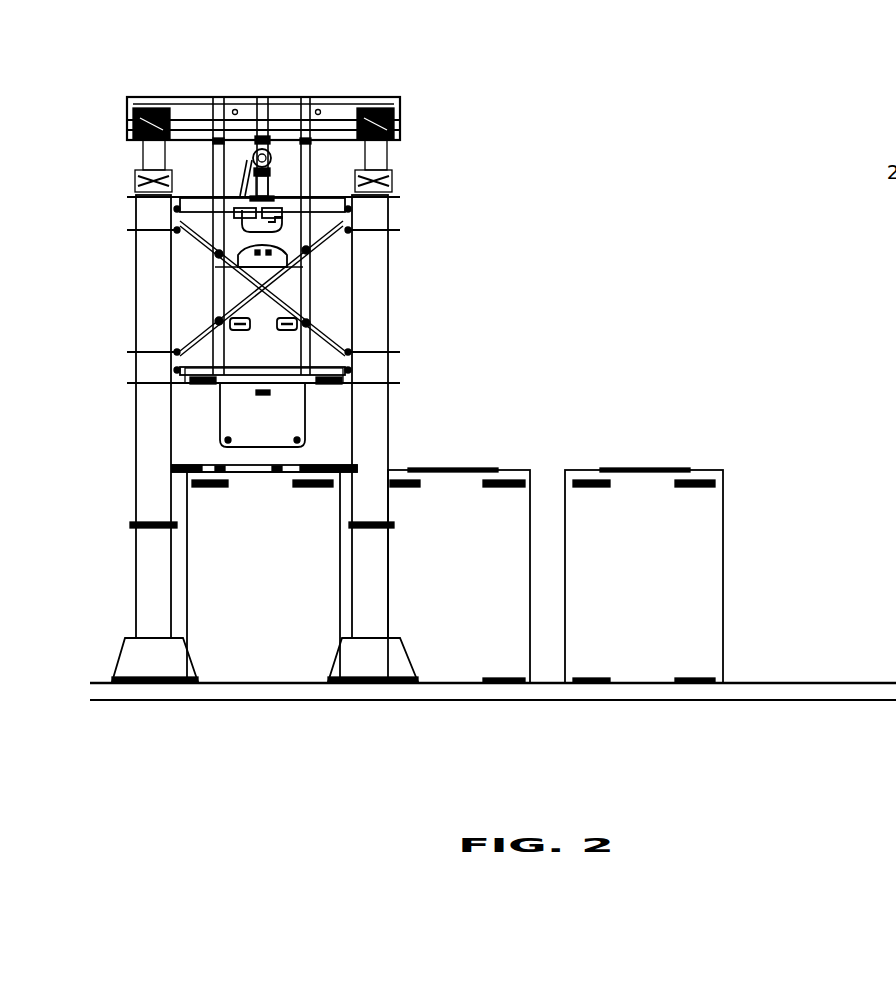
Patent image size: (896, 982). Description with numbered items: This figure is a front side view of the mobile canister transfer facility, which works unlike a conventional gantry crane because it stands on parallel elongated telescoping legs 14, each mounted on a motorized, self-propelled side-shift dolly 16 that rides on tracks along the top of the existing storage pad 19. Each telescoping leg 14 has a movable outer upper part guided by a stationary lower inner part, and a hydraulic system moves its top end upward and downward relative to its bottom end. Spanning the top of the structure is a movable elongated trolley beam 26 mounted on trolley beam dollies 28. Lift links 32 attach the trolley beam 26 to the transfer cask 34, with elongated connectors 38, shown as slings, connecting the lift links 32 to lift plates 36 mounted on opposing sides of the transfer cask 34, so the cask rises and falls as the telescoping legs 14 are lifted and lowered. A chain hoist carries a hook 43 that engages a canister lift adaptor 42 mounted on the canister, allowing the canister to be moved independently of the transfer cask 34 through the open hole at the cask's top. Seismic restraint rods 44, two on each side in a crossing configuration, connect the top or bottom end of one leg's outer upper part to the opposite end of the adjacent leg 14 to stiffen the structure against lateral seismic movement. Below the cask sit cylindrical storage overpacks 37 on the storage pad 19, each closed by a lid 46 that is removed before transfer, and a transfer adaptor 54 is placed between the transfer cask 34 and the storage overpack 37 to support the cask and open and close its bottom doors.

The telescoping leg 14 is at (142, 303).
The movable dolly 16 is at (392, 660).
The storage pad 19 is at (860, 683).
The trolley beam 26 is at (182, 108).
The trolley beam dolly 28 is at (380, 185).
The lift link 32 is at (314, 74).
The transfer cask 34 is at (252, 436).
The lift plate 36 is at (313, 280).
The storage overpack 37 is at (252, 578).
The elongated connector 38 is at (300, 157).
The canister lift adaptor 42 is at (268, 257).
The hook 43 is at (252, 237).
The seismic restraint rod 44 is at (317, 250).
The lid 46 is at (467, 470).
The transfer adaptor 54 is at (311, 465).